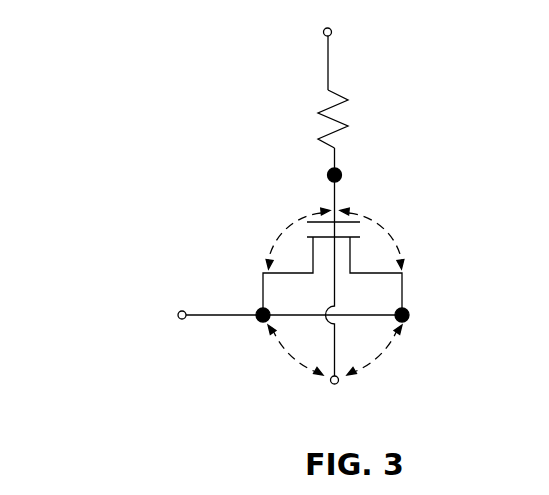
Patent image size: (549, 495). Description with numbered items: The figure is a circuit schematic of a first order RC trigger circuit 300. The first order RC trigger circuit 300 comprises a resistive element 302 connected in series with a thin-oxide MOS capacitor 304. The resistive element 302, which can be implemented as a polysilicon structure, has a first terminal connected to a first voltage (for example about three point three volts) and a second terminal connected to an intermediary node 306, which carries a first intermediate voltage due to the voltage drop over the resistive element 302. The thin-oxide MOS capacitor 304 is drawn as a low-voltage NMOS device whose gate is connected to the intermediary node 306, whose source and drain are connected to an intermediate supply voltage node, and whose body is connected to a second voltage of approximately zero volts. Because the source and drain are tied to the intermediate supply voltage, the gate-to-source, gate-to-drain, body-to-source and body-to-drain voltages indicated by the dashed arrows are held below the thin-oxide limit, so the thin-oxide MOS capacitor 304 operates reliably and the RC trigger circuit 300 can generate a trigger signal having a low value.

The first order RC trigger circuit 300 is at (134, 33).
The resistive element 302 is at (341, 96).
The thin-oxide MOS capacitor 304 is at (256, 184).
The intermediary node 306 is at (340, 171).